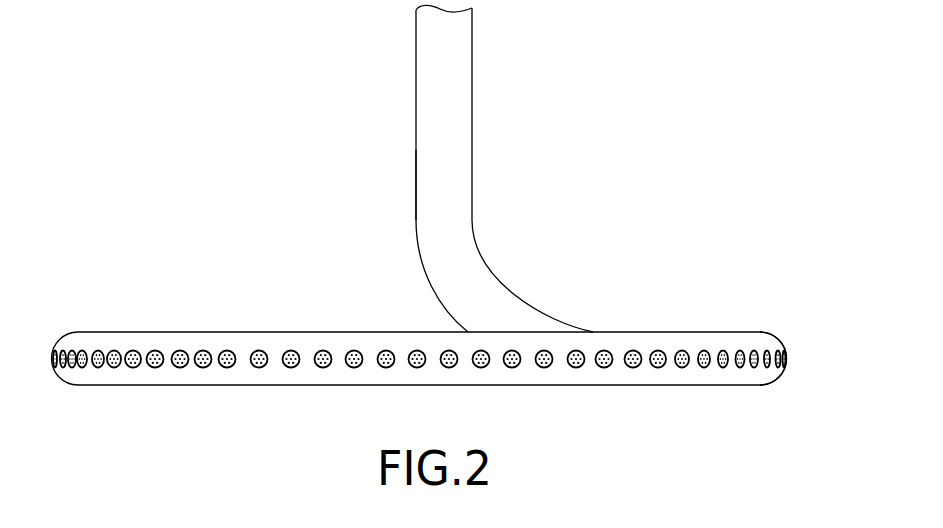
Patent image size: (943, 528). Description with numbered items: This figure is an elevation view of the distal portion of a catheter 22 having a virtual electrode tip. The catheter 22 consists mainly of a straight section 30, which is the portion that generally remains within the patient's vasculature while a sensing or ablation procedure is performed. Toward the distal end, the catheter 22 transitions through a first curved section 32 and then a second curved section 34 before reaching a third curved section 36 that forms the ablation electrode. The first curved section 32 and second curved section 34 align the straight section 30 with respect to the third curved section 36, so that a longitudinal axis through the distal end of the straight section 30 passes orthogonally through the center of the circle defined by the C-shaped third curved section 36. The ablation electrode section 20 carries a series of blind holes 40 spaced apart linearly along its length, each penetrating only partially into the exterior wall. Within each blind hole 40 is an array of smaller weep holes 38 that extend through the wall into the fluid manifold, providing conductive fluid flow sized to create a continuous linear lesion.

The ablation electrode section 20 is at (727, 417).
The catheter 22 is at (168, 332).
The straight section 30 is at (472, 42).
The first curved section 32 is at (428, 192).
The second curved section 34 is at (530, 317).
The third curved section 36 is at (782, 342).
The weep holes 38 is at (604, 351).
The blind holes 40 is at (633, 345).